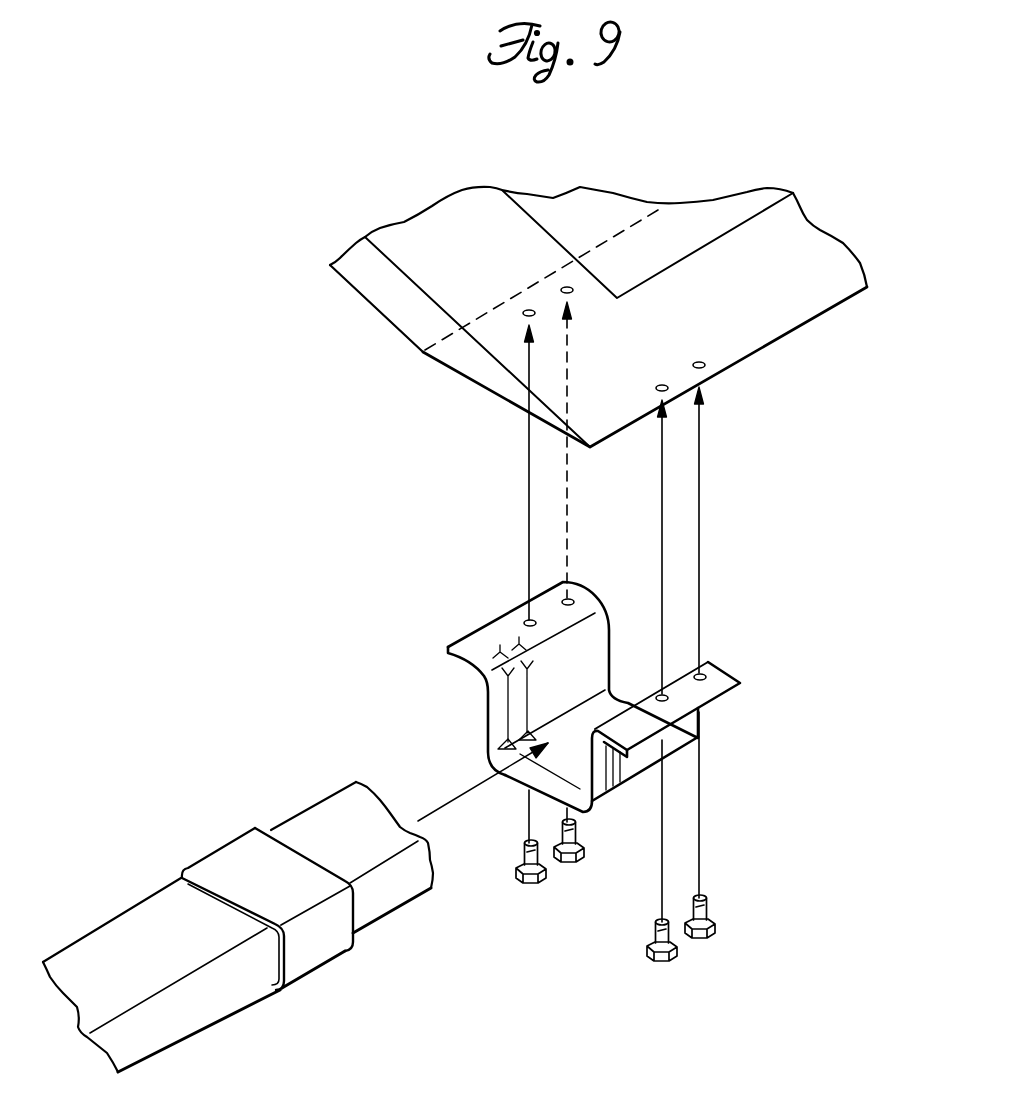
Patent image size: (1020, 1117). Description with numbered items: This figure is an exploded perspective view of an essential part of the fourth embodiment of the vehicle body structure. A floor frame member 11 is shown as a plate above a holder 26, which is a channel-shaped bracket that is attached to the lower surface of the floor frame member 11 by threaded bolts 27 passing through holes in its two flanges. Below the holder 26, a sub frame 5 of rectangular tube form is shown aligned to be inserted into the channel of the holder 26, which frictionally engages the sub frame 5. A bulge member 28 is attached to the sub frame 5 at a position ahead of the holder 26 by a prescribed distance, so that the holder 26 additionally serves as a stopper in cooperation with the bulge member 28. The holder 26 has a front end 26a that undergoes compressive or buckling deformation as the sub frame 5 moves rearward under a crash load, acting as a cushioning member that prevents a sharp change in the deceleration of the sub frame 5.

The sub frame 5 is at (180, 1023).
The floor frame member 11 is at (792, 317).
The holder 26 is at (603, 701).
The front end 26a is at (488, 710).
The threaded bolts 27 is at (523, 883).
The bulge member 28 is at (312, 963).